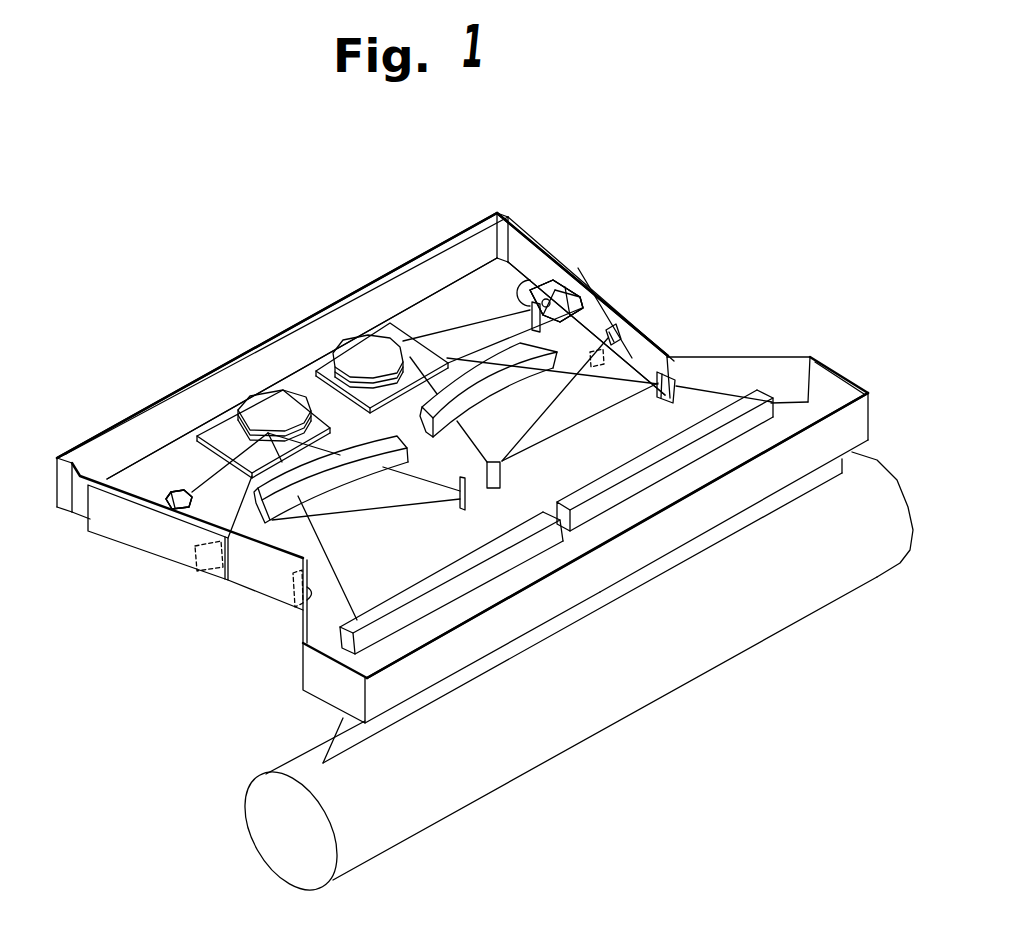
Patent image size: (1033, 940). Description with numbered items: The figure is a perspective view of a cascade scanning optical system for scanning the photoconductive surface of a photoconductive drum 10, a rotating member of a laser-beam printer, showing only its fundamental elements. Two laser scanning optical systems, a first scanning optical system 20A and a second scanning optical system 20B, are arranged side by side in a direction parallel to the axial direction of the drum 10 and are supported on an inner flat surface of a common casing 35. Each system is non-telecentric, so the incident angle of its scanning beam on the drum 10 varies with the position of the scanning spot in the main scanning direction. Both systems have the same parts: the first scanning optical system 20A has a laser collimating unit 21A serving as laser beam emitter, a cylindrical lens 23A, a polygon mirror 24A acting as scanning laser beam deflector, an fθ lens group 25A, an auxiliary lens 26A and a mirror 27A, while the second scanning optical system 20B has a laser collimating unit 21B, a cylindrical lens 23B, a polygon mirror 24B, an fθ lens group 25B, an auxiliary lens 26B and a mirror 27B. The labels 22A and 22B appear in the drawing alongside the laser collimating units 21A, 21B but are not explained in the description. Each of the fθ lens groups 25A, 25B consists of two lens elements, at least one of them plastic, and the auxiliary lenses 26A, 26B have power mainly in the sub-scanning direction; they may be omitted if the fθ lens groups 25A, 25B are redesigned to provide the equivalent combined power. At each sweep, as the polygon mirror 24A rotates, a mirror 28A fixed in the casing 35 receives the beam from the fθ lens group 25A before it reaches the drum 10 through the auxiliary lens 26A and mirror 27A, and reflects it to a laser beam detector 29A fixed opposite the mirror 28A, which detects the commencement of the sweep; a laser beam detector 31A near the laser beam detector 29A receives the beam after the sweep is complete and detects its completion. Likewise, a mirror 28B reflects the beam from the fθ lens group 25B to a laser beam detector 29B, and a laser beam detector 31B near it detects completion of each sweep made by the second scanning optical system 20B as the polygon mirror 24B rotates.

The photoconductive drum 10 is at (875, 498).
The first scanning optical system 20A is at (203, 403).
The second scanning optical system 20B is at (413, 287).
The laser collimating unit 21A is at (170, 497).
The lens 22A is at (170, 497).
The cylindrical lens 23A is at (188, 505).
The laser collimating unit 21B is at (578, 268).
The lens 22B is at (578, 268).
The cylindrical lens 23B is at (545, 280).
The polygon mirror 24A is at (267, 407).
The polygon mirror 24B is at (350, 360).
The fθ lens group 25A is at (223, 540).
The fθ lens group 25B is at (613, 333).
The auxiliary lens 26A is at (397, 603).
The auxiliary lens 26B is at (647, 467).
The mirror 27A is at (482, 590).
The mirror 27B is at (688, 483).
The mirror 28A is at (460, 500).
The mirror 28B is at (503, 476).
The laser beam detector 29A is at (198, 571).
The laser beam detector 29B is at (598, 357).
The laser beam detector 31A is at (307, 600).
The laser beam detector 31B is at (672, 368).
The casing 35 is at (527, 278).